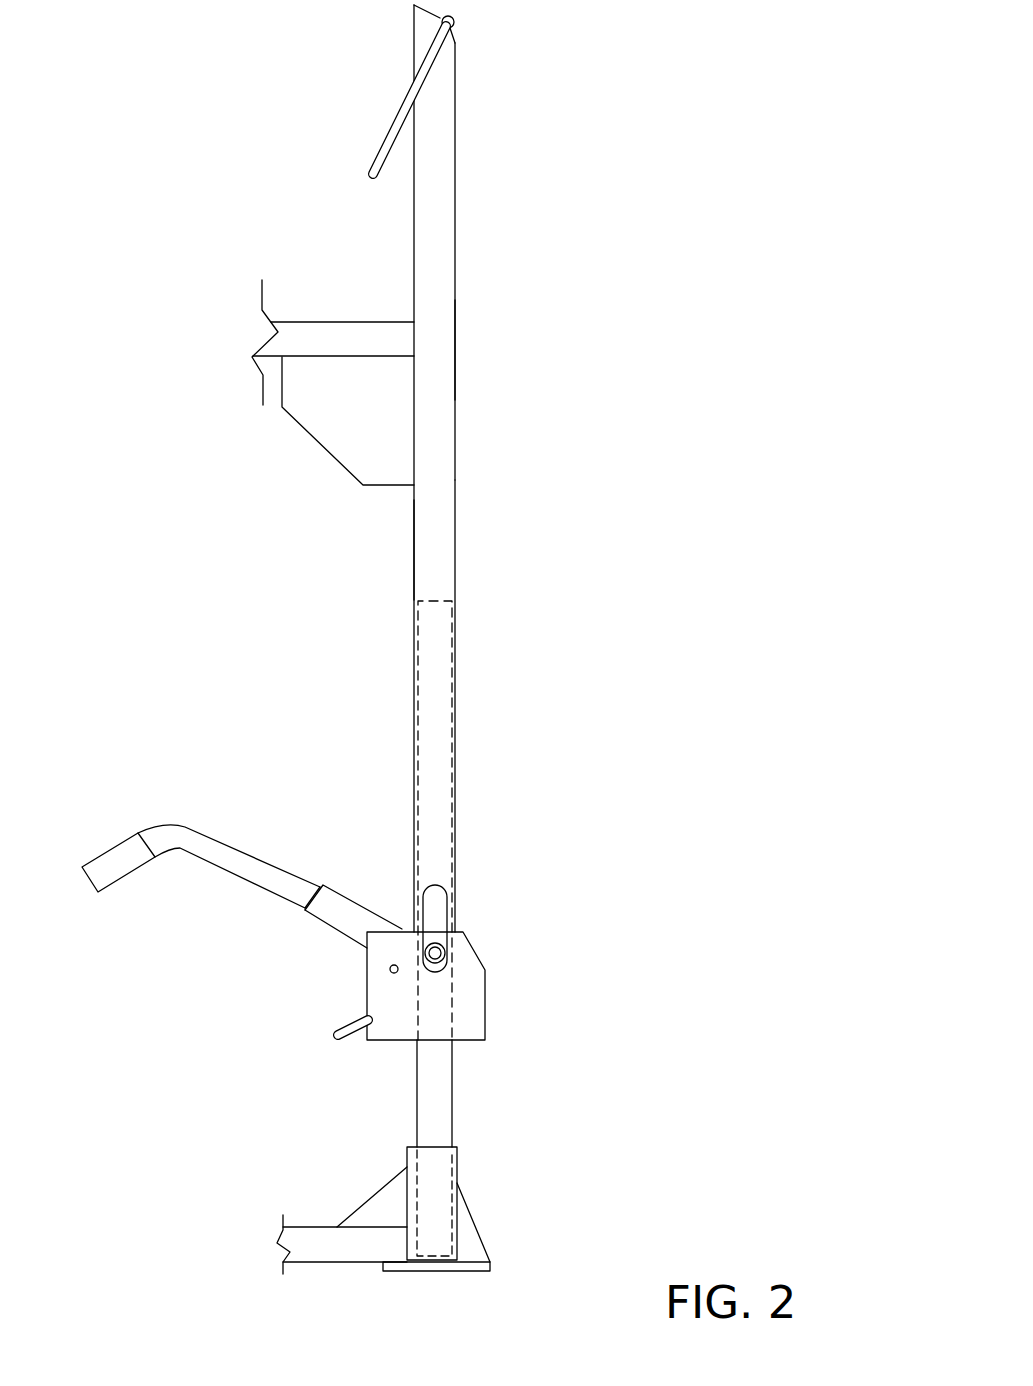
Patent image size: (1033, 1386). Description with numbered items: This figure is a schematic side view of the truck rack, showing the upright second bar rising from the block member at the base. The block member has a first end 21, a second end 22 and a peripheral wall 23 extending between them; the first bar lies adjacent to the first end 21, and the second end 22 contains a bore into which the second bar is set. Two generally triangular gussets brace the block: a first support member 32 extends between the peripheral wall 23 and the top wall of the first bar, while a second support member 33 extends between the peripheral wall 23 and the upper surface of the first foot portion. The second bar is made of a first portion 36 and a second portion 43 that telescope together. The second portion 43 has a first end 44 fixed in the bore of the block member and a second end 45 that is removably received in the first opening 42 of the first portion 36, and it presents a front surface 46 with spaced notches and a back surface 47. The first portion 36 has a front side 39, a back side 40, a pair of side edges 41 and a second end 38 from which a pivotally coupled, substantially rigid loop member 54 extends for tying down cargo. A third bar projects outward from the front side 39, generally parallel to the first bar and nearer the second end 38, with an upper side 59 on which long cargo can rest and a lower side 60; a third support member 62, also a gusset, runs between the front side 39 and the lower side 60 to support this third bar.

The first end 21 is at (440, 1258).
The second end 22 is at (457, 1145).
The peripheral wall 23 is at (455, 1167).
The first support member 32 is at (373, 1188).
The second support member 33 is at (472, 1243).
The first portion 36 is at (455, 233).
The second end 38 is at (413, 6).
The front side 39 is at (414, 523).
The back side 40 is at (456, 478).
The side edges 41 is at (437, 342).
The first opening 42 is at (450, 923).
The second portion 43 is at (453, 1055).
The first end 44 is at (433, 1256).
The second end 45 is at (437, 600).
The front surface 46 is at (417, 1087).
The back surface 47 is at (453, 1090).
The loop member 54 is at (393, 120).
The upper side 59 is at (297, 322).
The lower side 60 is at (262, 360).
The third support member 62 is at (333, 342).